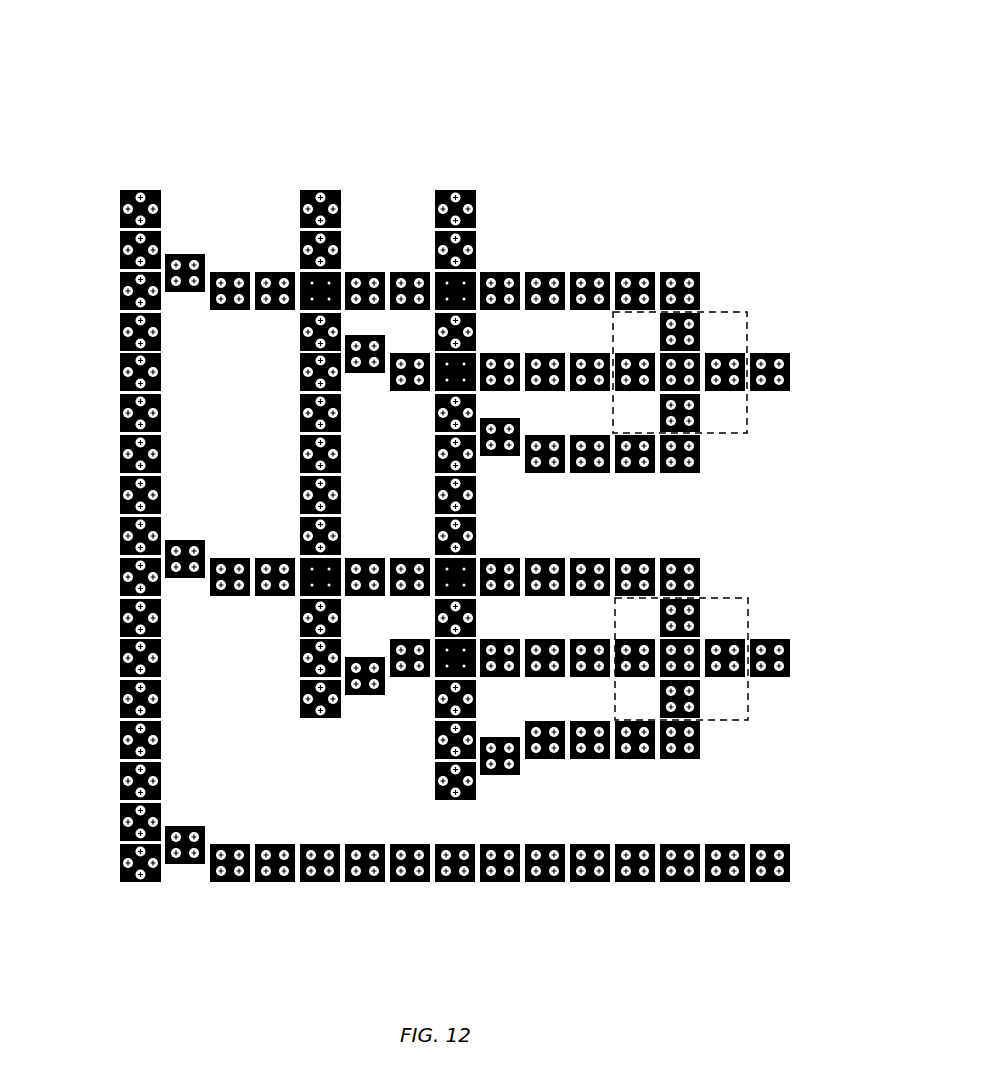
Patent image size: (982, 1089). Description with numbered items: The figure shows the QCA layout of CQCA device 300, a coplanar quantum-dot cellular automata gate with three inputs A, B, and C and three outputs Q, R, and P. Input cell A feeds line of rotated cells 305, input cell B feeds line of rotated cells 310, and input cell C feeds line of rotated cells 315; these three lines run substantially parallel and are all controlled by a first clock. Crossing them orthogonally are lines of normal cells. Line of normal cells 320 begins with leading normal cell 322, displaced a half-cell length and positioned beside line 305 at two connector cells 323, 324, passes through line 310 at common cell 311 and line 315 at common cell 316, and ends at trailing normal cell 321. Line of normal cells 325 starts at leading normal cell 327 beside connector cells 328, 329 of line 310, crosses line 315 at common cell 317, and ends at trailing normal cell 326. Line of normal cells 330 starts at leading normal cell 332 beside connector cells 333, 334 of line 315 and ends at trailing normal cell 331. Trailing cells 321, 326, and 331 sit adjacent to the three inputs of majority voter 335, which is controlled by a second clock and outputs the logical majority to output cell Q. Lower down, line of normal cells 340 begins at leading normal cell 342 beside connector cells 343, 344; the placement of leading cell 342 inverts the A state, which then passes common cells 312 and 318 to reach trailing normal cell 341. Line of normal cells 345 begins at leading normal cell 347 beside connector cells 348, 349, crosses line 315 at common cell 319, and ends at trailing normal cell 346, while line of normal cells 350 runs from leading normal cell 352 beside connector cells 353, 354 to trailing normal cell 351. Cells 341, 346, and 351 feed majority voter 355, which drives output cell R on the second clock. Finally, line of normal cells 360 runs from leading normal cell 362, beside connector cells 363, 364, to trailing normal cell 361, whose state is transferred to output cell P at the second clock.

The CQCA device 300 is at (108, 32).
The line of rotated cells 305 is at (141, 105).
The line of rotated cells 310 is at (317, 105).
The line of rotated cells 315 is at (453, 110).
The common cell 311 is at (341, 272).
The common cell 312 is at (341, 558).
The common cell 316 is at (477, 272).
The common cell 317 is at (477, 353).
The common cell 318 is at (477, 558).
The common cell 319 is at (433, 678).
The line of normal cells 320 is at (738, 286).
The trailing normal cell 321 is at (690, 272).
The leading normal cell 322 is at (207, 255).
The connector cell 323 is at (120, 250).
The connector cell 324 is at (120, 290).
The line of normal cells 325 is at (808, 373).
The trailing normal cell 326 is at (588, 392).
The leading normal cell 327 is at (366, 373).
The connector cell 328 is at (300, 328).
The connector cell 329 is at (300, 362).
The line of normal cells 330 is at (730, 457).
The trailing normal cell 331 is at (685, 473).
The leading normal cell 332 is at (505, 457).
The connector cell 333 is at (435, 412).
The connector cell 334 is at (435, 450).
The majority voter 335 is at (747, 418).
The line of normal cells 340 is at (733, 578).
The trailing normal cell 341 is at (690, 558).
The leading normal cell 342 is at (207, 541).
The connector cell 343 is at (120, 540).
The connector cell 344 is at (120, 580).
The line of normal cells 345 is at (806, 660).
The trailing normal cell 346 is at (588, 678).
The leading normal cell 347 is at (366, 697).
The connector cell 348 is at (300, 662).
The connector cell 349 is at (300, 702).
The line of normal cells 350 is at (740, 742).
The trailing normal cell 351 is at (690, 760).
The leading normal cell 352 is at (508, 777).
The connector cell 353 is at (435, 738).
The connector cell 354 is at (435, 785).
The majority voter 355 is at (748, 705).
The line of normal cells 360 is at (812, 862).
The trailing normal cell 361 is at (730, 882).
The leading normal cell 362 is at (207, 826).
The connector cell 363 is at (120, 825).
The connector cell 364 is at (120, 862).